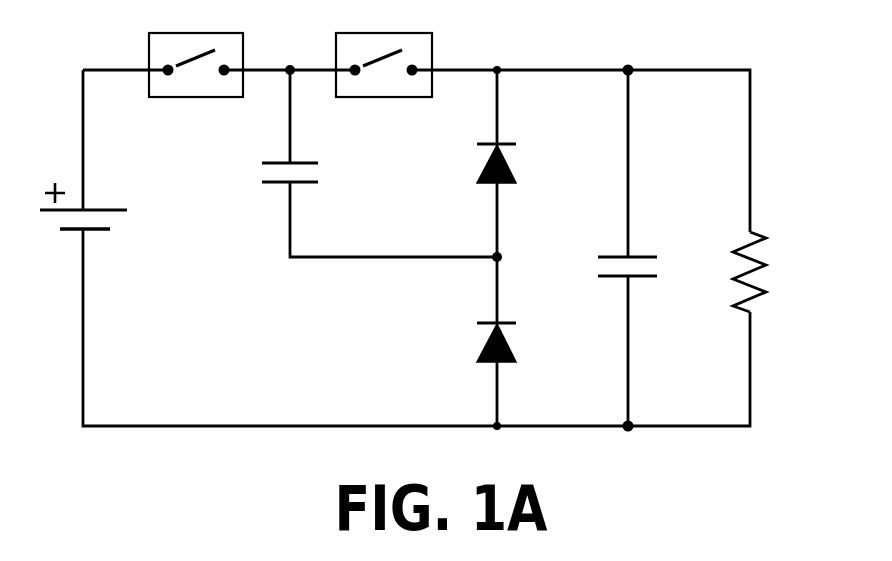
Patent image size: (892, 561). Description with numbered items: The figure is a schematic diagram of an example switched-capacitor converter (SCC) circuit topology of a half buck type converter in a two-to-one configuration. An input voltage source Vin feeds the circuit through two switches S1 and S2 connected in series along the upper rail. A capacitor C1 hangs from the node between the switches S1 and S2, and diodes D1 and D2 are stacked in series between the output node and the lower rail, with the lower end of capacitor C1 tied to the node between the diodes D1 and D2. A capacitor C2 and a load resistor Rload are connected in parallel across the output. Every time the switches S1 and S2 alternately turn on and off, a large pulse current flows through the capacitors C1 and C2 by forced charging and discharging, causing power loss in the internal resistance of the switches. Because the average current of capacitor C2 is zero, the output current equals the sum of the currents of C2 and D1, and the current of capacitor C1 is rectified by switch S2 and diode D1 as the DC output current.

The switch S1 is at (196, 48).
The switch S2 is at (384, 48).
The input voltage source Vin is at (88, 226).
The capacitor C1 is at (277, 193).
The diode D1 is at (475, 161).
The diode D2 is at (475, 341).
The capacitor C2 is at (616, 286).
The load resistor Rload is at (782, 283).